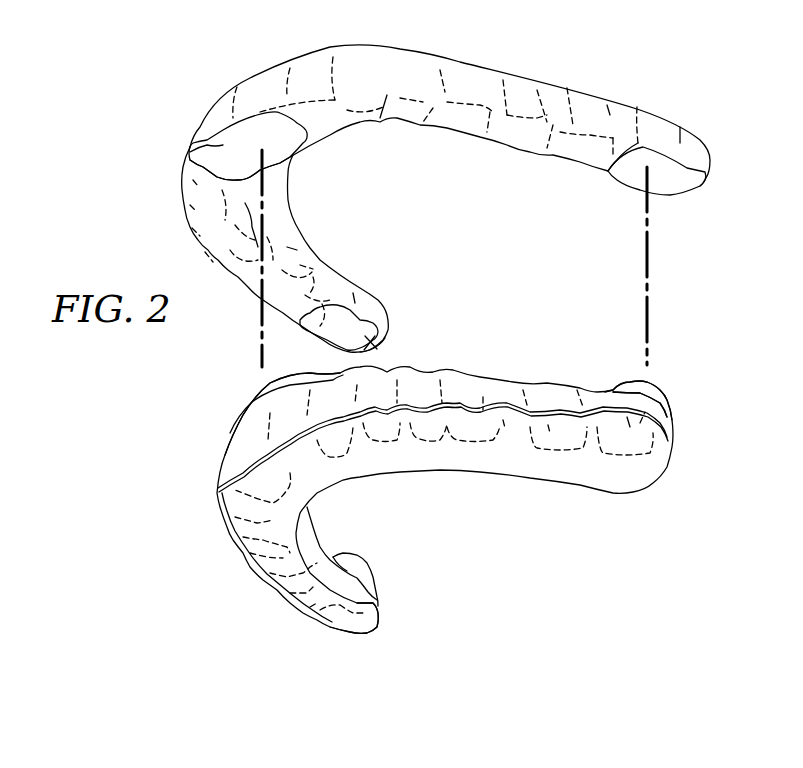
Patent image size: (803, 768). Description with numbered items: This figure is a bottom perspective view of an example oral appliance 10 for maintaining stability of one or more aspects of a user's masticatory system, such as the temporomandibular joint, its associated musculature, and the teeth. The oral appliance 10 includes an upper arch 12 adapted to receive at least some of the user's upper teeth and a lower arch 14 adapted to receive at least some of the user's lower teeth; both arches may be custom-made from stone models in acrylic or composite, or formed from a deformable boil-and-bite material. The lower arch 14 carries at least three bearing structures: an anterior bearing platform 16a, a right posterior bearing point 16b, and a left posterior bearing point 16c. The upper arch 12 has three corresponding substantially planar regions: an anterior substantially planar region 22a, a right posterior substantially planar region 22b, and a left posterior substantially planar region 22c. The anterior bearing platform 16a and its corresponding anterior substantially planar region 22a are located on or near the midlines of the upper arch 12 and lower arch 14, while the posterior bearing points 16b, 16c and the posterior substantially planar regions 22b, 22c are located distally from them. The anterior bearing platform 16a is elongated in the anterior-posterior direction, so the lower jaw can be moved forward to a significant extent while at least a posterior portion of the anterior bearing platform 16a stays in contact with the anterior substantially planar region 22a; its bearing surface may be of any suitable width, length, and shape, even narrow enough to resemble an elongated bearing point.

The oral appliance 10 is at (565, 549).
The upper arch 12 is at (702, 143).
The lower arch 14 is at (662, 417).
The anterior bearing platform 16a is at (250, 403).
The right posterior bearing point 16b is at (653, 395).
The left posterior bearing point 16c is at (363, 570).
The anterior substantially planar region 22a is at (200, 133).
The right posterior substantially planar region 22b is at (682, 187).
The left posterior substantially planar region 22c is at (380, 345).